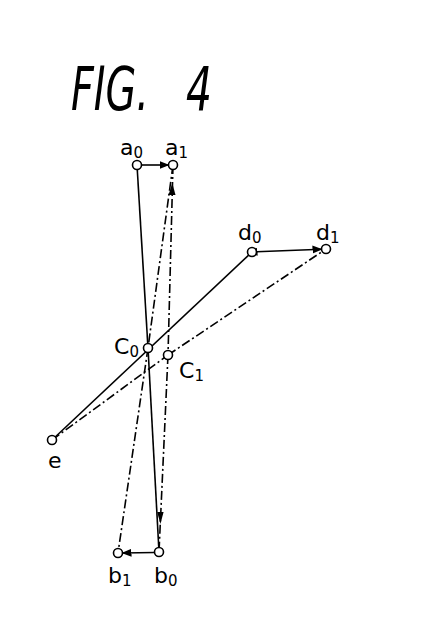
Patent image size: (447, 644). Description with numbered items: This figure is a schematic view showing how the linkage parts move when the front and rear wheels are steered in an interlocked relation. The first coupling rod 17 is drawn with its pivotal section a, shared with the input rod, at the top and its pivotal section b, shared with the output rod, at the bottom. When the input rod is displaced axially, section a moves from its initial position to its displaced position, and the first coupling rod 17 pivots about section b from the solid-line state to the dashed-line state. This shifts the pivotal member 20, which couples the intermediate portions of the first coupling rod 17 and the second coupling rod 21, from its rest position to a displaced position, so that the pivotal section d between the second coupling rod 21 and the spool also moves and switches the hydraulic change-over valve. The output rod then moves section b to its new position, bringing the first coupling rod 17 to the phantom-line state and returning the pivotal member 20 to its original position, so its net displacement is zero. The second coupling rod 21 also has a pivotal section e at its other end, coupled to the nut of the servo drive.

The first coupling rod 17 is at (142, 233).
The pivotal member 20 is at (145, 344).
The second coupling rod 21 is at (114, 381).